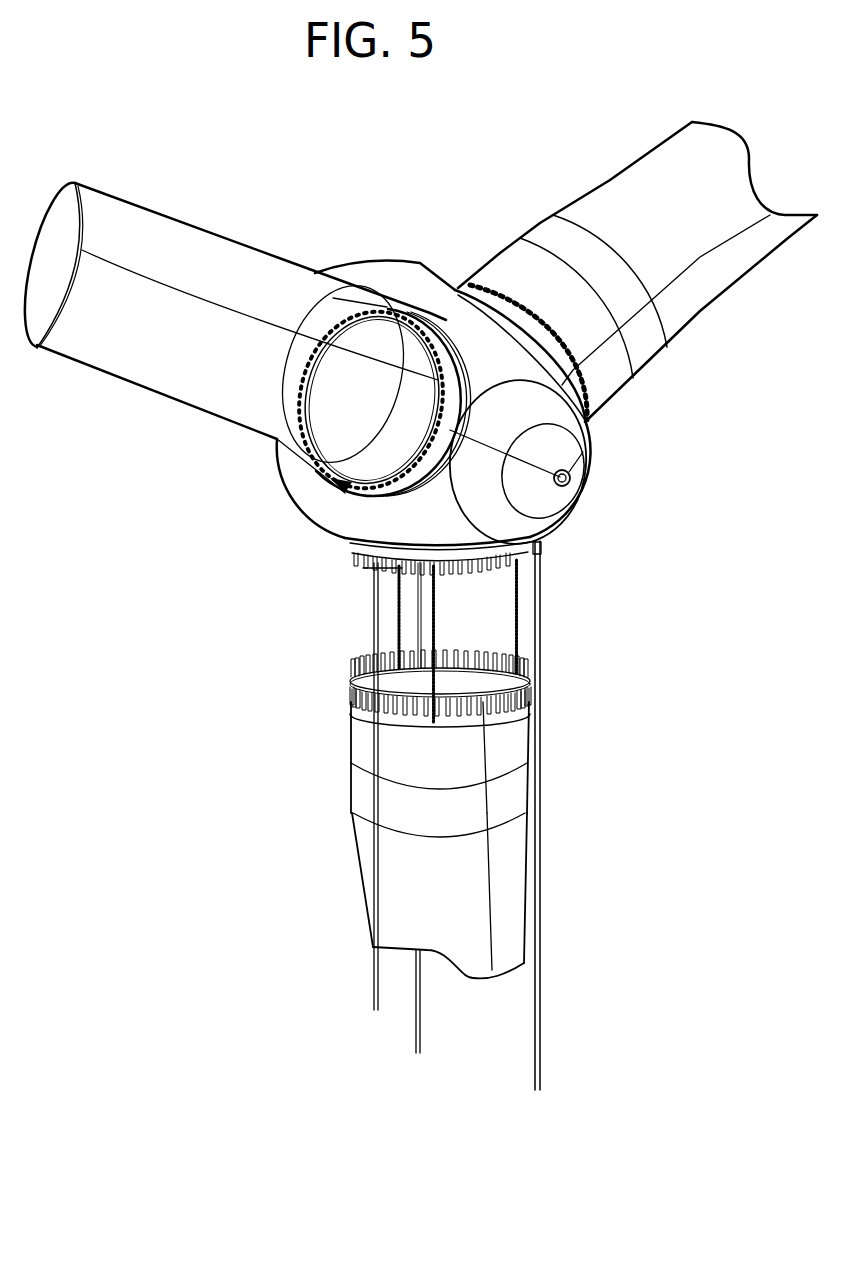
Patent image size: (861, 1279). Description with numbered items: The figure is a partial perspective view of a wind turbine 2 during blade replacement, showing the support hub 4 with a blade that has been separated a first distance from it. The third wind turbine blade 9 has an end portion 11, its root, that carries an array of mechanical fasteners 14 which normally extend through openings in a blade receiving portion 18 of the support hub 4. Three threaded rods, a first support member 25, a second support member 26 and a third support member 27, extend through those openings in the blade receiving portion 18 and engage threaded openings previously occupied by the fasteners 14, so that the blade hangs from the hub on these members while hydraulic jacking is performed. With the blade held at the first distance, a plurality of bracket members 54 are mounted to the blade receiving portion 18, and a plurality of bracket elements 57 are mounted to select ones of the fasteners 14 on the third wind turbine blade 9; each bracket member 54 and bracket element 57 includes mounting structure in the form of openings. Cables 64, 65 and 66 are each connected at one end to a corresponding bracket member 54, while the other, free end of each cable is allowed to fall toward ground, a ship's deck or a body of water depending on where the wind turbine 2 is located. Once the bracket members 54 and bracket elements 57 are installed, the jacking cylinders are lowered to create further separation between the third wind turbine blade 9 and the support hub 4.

The wind turbine 2 is at (165, 428).
The support hub 4 is at (403, 274).
The bracket member 54 is at (552, 544).
The blade receiving portion 18 is at (343, 545).
The first support member 25 is at (394, 623).
The second support member 26 is at (442, 606).
The third support member 27 is at (527, 608).
The mechanical fasteners 14 is at (491, 647).
The cable 64 is at (550, 674).
The bracket element 57 is at (536, 708).
The end portion 11 is at (341, 766).
The third wind turbine blade 9 is at (349, 897).
The cable 65 is at (364, 985).
The cable 66 is at (431, 1048).